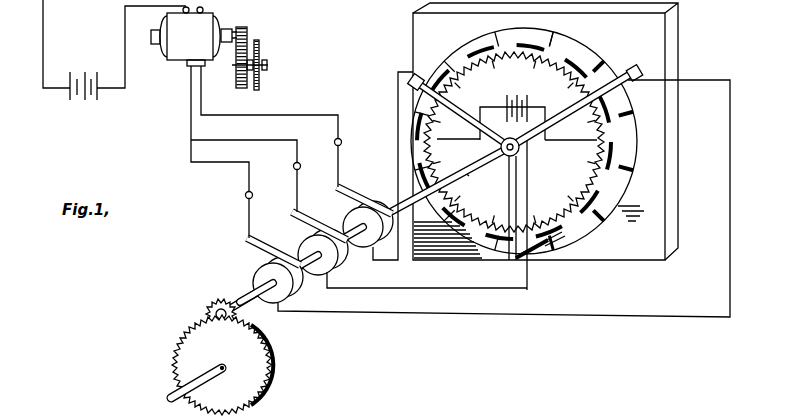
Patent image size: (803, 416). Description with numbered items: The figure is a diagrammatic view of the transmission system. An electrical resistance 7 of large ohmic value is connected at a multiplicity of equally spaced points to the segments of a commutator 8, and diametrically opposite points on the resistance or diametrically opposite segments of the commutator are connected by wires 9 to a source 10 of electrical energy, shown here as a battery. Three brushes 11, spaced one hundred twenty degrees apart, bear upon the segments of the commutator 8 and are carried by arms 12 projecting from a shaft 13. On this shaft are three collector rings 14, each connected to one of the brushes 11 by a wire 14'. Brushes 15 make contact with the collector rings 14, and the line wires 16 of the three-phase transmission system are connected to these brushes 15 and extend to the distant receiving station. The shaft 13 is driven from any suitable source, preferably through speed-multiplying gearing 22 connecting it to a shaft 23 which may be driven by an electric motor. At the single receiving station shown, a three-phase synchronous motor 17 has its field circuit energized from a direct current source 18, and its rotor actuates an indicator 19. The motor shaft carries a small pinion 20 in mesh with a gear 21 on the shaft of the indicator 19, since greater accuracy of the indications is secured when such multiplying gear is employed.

The electrical resistance 7 is at (576, 172).
The commutator 8 is at (562, 40).
The wires 9 is at (562, 138).
The source of supply of electrical energy 10 is at (506, 100).
The brushes 11 is at (397, 102).
The arms 12 is at (480, 110).
The shaft 13 is at (470, 173).
The collector rings 14 is at (475, 191).
The wire 14' is at (397, 285).
The brushes 15 is at (290, 240).
The line wires 16 is at (237, 143).
The three-phase synchronous motor 17 is at (185, 46).
The direct current source 18 is at (90, 99).
The indicator 19 is at (262, 55).
The pinion 20 is at (248, 33).
The gear 21 is at (240, 85).
The speed-multiplying gearing 22 is at (205, 318).
The shaft 23 is at (172, 394).